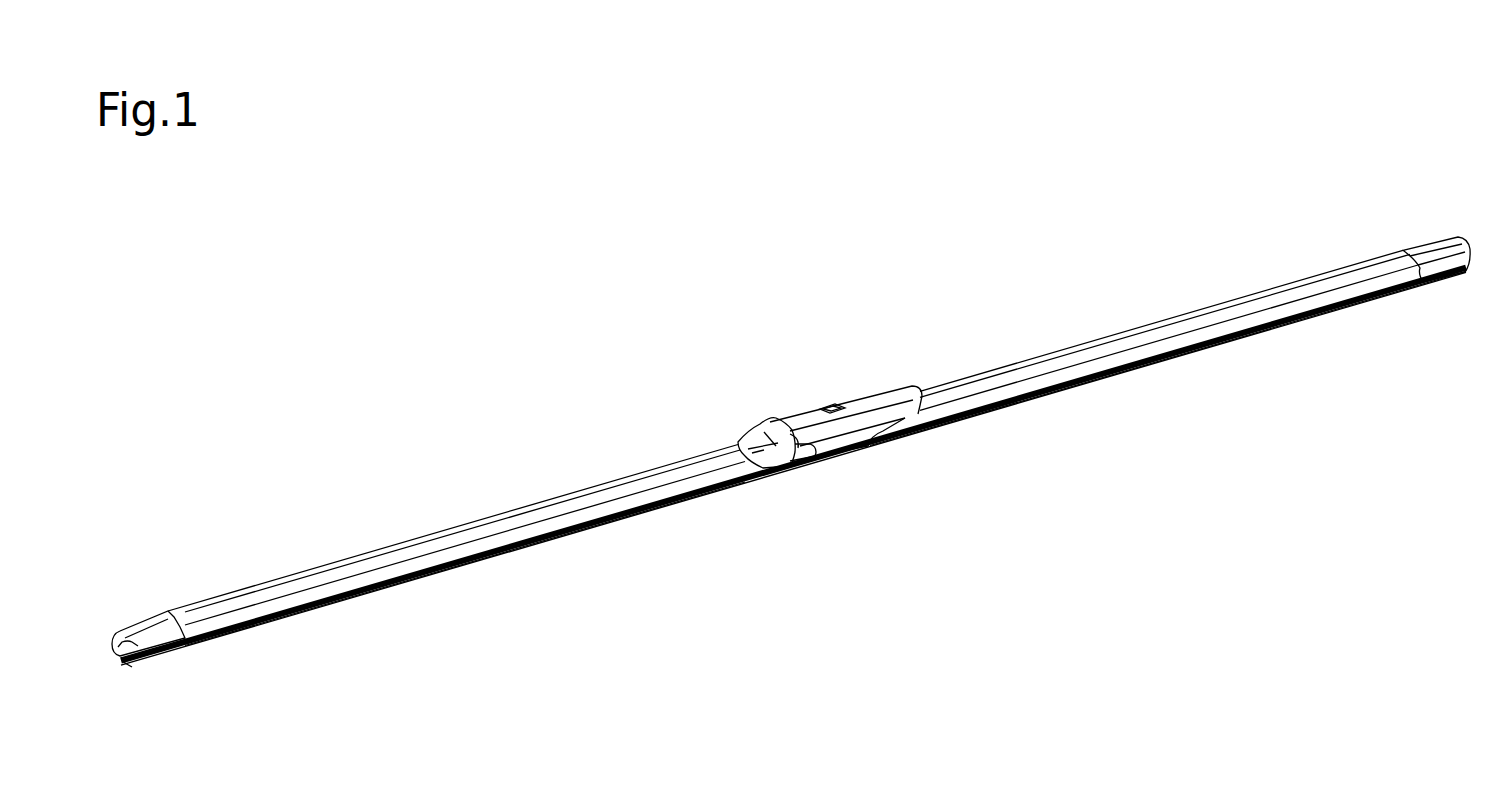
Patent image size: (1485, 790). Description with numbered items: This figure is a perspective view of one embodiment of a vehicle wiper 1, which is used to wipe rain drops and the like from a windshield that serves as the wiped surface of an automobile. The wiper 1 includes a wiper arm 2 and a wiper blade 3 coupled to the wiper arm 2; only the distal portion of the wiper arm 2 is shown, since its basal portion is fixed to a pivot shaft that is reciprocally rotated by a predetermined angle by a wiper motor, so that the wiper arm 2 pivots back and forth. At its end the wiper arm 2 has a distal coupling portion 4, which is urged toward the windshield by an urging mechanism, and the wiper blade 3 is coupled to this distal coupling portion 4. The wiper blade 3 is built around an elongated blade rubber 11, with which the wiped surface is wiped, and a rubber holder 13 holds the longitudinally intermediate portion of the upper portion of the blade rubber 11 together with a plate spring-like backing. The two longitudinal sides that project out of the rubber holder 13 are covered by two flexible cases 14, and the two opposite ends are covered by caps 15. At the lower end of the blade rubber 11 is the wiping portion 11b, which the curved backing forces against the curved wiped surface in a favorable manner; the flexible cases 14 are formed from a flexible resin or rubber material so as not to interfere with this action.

The wiper 1 is at (502, 212).
The wiper arm 2 is at (899, 380).
The wiper blade 3 is at (614, 471).
The distal coupling portion 4 is at (803, 410).
The blade rubber 11 is at (487, 555).
The wiping portion 11b is at (588, 527).
The rubber holder 13 is at (753, 428).
The flexible case 14 is at (393, 543).
The cap 15 is at (138, 612).